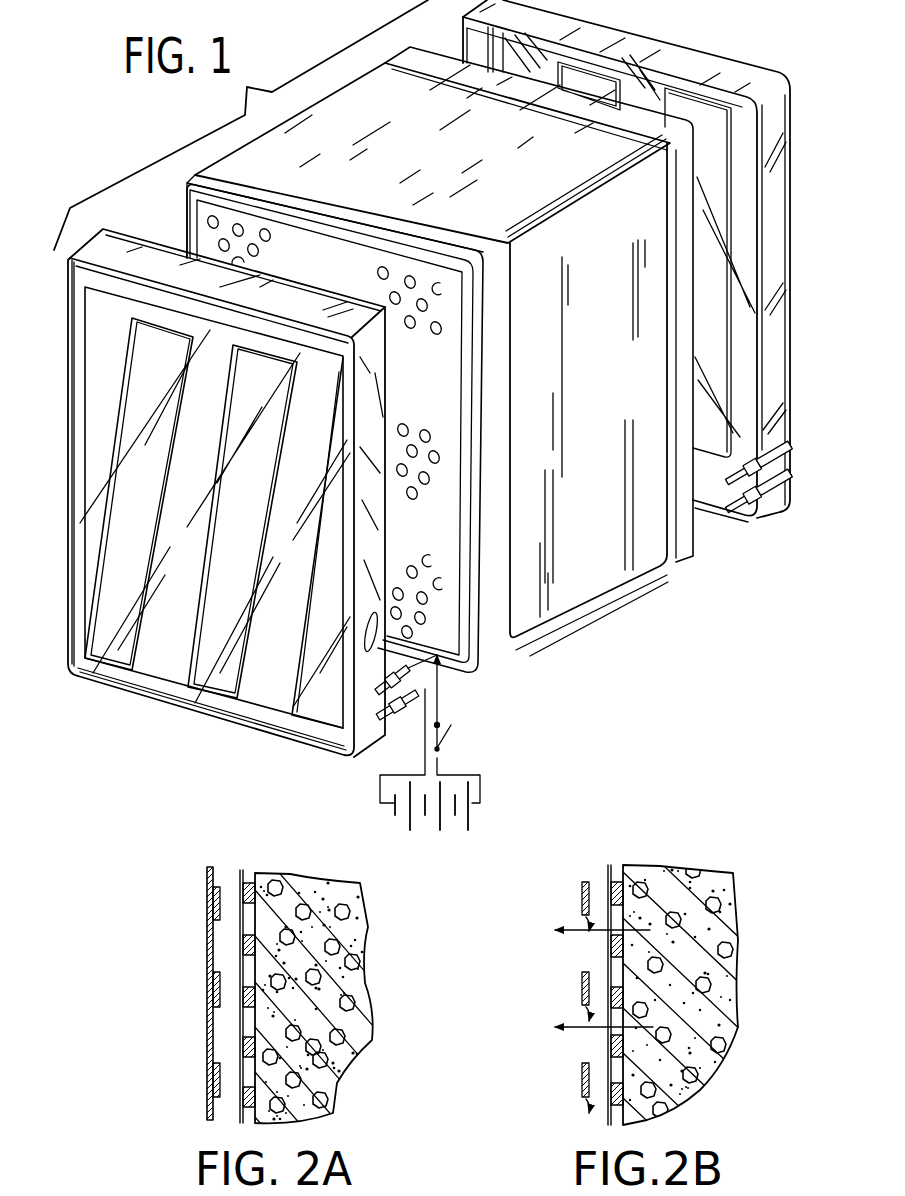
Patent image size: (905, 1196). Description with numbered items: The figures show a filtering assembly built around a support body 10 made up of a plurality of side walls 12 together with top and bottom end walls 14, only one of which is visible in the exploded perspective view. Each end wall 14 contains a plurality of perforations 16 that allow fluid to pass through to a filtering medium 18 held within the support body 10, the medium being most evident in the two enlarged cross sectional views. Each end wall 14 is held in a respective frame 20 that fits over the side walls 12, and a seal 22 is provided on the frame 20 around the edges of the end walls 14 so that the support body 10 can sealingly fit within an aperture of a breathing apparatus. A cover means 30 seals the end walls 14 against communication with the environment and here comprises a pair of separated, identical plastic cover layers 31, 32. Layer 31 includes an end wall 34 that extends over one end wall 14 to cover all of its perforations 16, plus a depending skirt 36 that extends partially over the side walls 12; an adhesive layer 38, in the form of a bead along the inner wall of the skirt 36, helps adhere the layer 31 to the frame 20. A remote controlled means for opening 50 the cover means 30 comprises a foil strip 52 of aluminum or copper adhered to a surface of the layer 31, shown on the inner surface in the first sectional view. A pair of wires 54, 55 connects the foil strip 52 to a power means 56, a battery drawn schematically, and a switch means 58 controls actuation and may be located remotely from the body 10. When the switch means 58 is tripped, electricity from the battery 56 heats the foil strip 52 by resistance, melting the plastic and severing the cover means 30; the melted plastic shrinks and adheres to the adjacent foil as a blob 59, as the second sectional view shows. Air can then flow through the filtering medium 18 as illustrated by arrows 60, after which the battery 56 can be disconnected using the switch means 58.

In FIG. 1, the support body 10 is at (311, 101).
In FIG. 1, the side walls 12 is at (278, 148).
In FIG. 1, the end walls 14 is at (443, 636).
In FIG. 2A, the end walls 14 is at (240, 948).
In FIG. 1, the perforations 16 is at (211, 223).
In FIG. 2A, the perforations 16 is at (245, 1067).
In FIG. 2A, the filtering medium 18 is at (350, 983).
In FIG. 2B, the filtering medium 18 is at (687, 900).
In FIG. 1, the frame 20 is at (497, 610).
In FIG. 1, the seal 22 is at (466, 491).
In FIG. 1, the cover means 30 is at (158, 708).
In FIG. 1, the cover layer 31 is at (129, 676).
In FIG. 1, the cover layer 32 is at (673, 62).
In FIG. 1, the end wall 34 is at (142, 352).
In FIG. 2A, the end wall 34 is at (208, 920).
In FIG. 1, the depending skirt 36 is at (123, 256).
In FIG. 1, the adhesive layer 38 is at (374, 611).
In FIG. 1, the means for opening 50 is at (86, 470).
In FIG. 1, the foil strip 52 is at (217, 694).
In FIG. 2A, the foil strip 52 is at (210, 1007).
In FIG. 2B, the foil strip 52 is at (584, 992).
In FIG. 1, the wire 54 is at (425, 732).
In FIG. 1, the wire 55 is at (441, 689).
In FIG. 1, the power means 56 is at (427, 827).
In FIG. 1, the switch means 58 is at (450, 743).
In FIG. 2B, the blob 59 is at (589, 1107).
In FIG. 2B, the arrows 60 is at (590, 935).